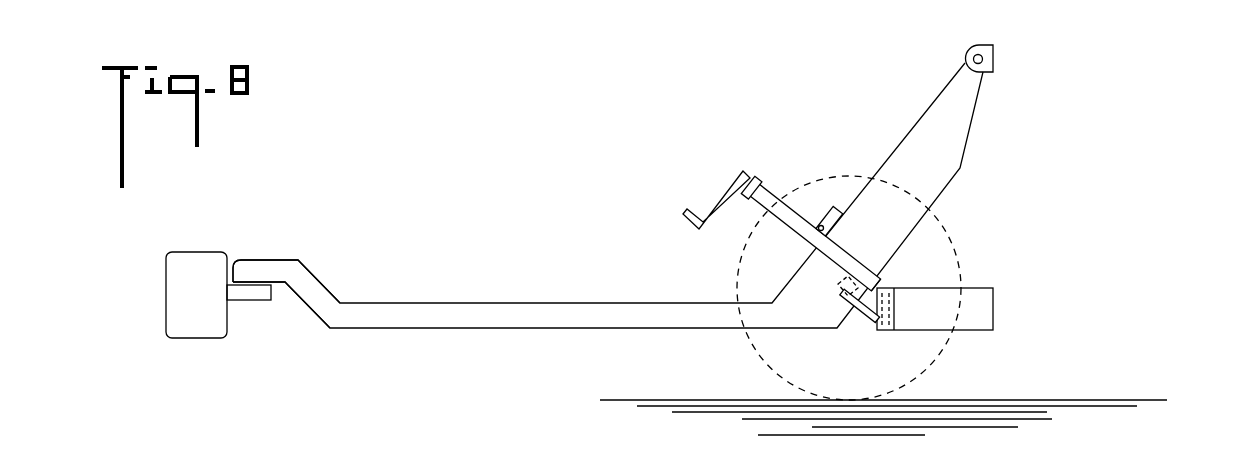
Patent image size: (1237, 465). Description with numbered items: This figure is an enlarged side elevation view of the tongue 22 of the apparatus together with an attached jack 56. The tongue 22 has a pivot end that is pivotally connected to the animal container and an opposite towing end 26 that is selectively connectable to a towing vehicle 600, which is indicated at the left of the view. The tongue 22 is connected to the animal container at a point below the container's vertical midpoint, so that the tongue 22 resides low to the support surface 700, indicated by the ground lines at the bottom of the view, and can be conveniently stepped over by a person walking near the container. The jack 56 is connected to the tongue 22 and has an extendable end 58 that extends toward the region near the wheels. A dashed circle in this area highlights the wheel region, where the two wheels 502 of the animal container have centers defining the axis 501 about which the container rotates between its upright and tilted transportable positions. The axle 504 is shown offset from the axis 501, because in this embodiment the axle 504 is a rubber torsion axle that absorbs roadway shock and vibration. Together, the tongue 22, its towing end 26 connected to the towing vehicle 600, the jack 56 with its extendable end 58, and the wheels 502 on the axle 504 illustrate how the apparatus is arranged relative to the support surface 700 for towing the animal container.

The towing vehicle 600 is at (130, 288).
The towing end 26 is at (257, 267).
The tongue 22 is at (505, 316).
The jack 56 is at (777, 207).
The extendable end 58 is at (882, 278).
The axis 501 is at (847, 294).
The wheels 502 is at (746, 291).
The axle 504 is at (884, 332).
The support surface 700 is at (997, 430).